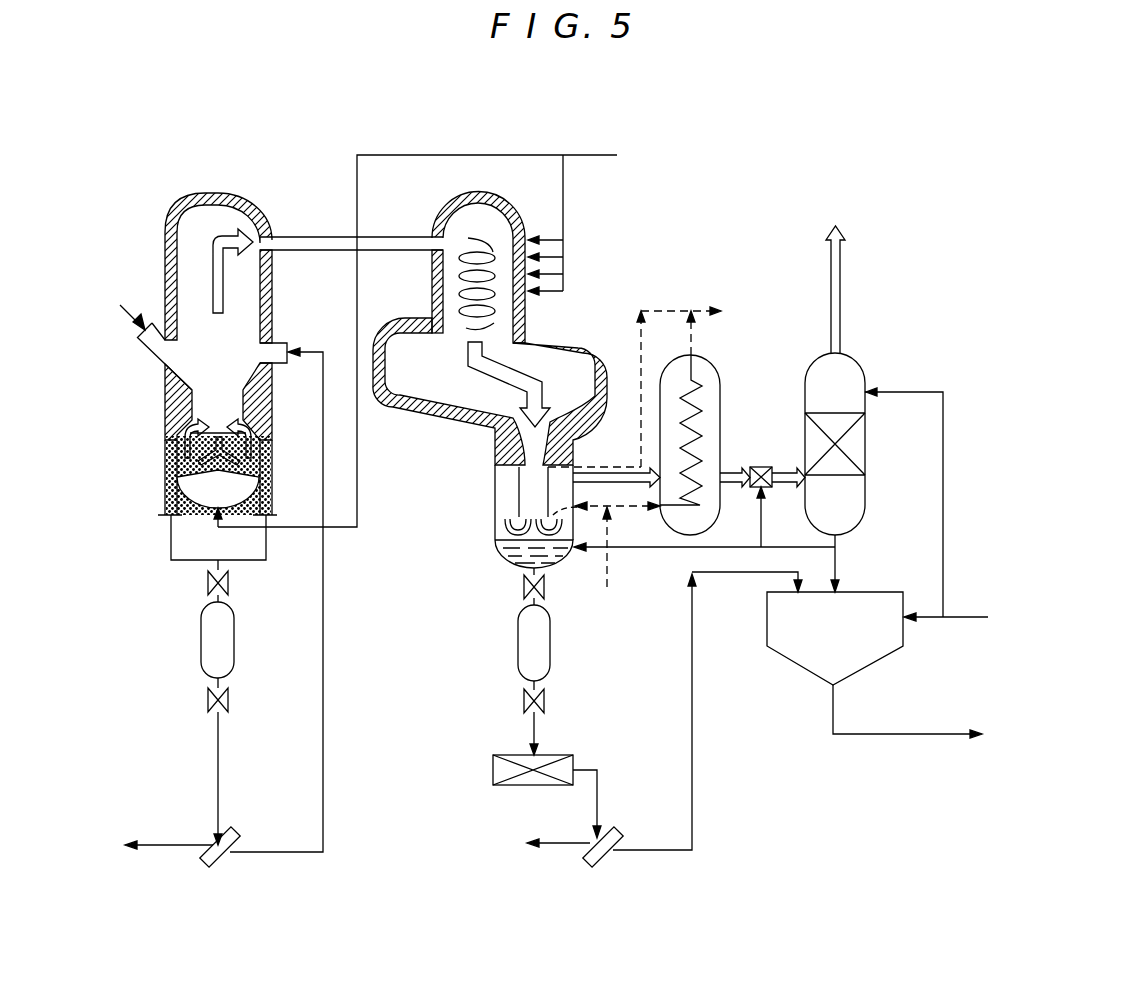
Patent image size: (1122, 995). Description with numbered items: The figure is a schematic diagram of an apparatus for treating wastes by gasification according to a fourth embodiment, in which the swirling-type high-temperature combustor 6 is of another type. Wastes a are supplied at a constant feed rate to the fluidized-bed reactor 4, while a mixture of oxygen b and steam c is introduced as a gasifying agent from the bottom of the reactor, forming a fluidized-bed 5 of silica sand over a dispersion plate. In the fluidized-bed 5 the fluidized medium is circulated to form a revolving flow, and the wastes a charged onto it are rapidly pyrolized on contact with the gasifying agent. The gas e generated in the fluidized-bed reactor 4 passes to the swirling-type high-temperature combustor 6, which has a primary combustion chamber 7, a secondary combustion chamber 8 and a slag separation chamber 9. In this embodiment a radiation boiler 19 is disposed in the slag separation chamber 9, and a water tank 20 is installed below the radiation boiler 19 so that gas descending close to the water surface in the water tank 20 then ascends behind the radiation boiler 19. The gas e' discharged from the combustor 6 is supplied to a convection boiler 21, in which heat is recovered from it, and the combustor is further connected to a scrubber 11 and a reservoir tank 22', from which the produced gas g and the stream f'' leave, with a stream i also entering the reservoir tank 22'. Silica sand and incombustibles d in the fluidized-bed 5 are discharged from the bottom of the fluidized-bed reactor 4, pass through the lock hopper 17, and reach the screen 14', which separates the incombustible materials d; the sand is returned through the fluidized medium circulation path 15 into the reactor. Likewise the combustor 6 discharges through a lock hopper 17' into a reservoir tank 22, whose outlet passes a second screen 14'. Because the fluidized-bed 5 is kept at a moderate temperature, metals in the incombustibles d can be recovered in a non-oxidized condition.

The fluidized-bed reactor 4 is at (267, 212).
The fluidized-bed 5 is at (267, 447).
The swirling-type high-temperature combustor 6 is at (560, 342).
The primary combustion chamber 7 is at (451, 288).
The secondary combustion chamber 8 is at (450, 389).
The slag separation chamber 9 is at (532, 498).
The scrubber 11 is at (867, 447).
The screen 14' is at (433, 826).
The fluidized medium circulation path 15 is at (325, 590).
The lock hopper 17 is at (191, 640).
The lock hopper 17' is at (503, 643).
The radiation boiler 19 is at (520, 481).
The water tank 20 is at (553, 560).
The convection boiler 21 is at (722, 372).
The reservoir tank 22 is at (566, 712).
The reservoir tank 22' is at (797, 639).
The wastes a is at (121, 308).
The oxygen b is at (598, 156).
The steam c is at (704, 305).
The incombustibles d is at (168, 843).
The gas generated in fluidized-bed reactor e is at (351, 221).
The gas generated in swirling-type high-temperature combustor e' is at (604, 454).
The produced gas g is at (846, 260).
The liquid stream i is at (962, 618).
The product stream f'' is at (907, 711).